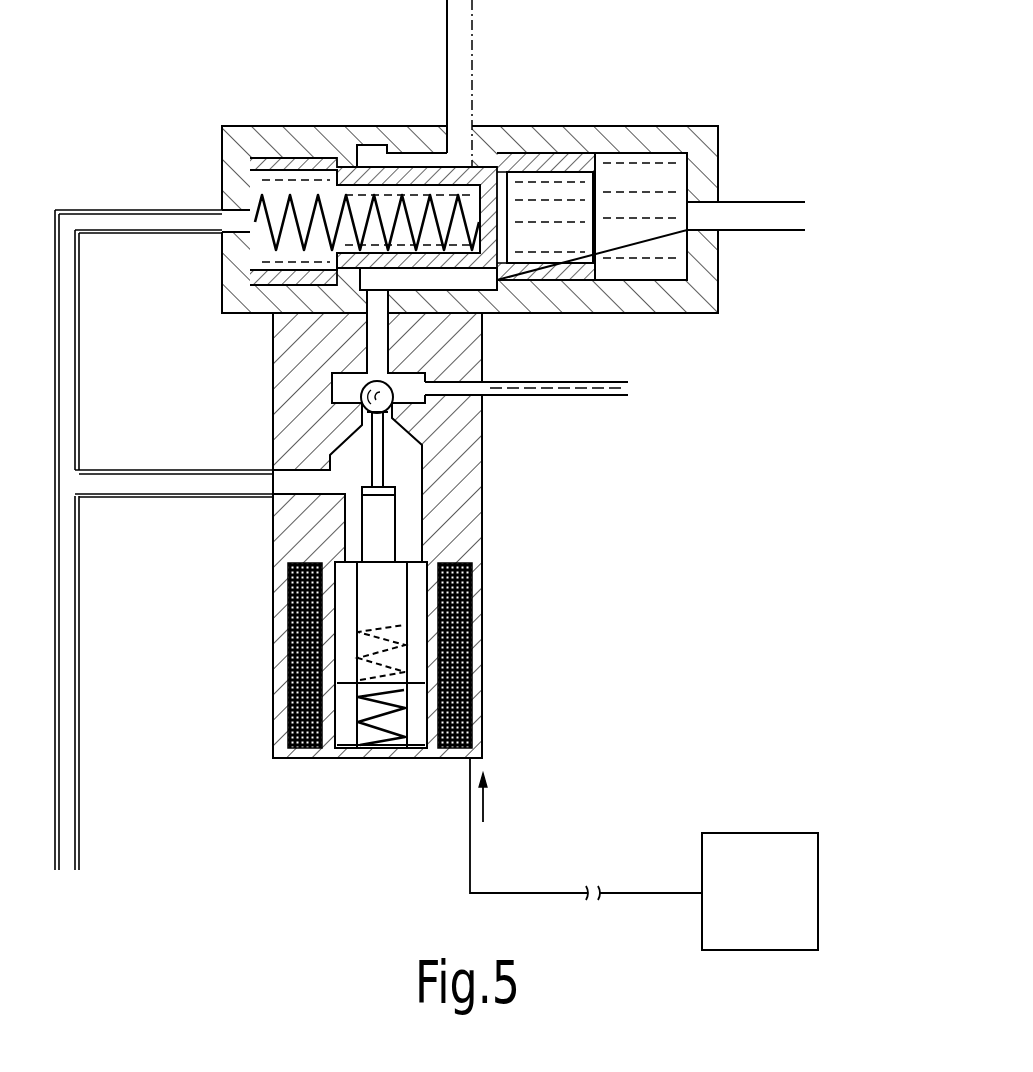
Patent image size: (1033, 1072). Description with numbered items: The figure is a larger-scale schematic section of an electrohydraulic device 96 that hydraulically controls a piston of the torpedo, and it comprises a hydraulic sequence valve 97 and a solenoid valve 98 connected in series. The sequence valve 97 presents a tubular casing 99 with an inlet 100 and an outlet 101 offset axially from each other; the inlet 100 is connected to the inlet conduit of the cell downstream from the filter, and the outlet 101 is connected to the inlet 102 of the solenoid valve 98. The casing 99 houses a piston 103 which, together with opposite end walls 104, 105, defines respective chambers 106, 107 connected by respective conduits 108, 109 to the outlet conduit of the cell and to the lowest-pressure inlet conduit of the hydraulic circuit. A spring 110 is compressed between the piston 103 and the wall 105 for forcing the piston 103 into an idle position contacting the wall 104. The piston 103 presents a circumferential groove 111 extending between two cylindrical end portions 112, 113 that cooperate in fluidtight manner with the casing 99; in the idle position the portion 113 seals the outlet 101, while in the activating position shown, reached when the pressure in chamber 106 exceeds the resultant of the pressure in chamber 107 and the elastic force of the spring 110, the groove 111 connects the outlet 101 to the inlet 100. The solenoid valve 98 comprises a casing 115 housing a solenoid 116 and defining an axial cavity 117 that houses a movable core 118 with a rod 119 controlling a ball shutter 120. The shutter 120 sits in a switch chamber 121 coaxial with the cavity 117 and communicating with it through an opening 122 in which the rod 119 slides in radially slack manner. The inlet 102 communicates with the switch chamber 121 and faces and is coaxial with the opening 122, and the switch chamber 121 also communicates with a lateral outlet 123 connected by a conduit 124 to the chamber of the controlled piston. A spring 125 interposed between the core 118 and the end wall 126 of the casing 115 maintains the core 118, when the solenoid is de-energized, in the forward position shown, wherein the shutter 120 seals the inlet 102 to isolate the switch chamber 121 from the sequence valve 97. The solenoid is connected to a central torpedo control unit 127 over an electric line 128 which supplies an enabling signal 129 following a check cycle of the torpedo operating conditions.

The electrohydraulic device 96 is at (622, 455).
The hydraulic sequence valve 97 is at (604, 112).
The solenoid valve 98 is at (398, 440).
The tubular casing 99 is at (652, 312).
The inlet 100 is at (460, 70).
The outlet 101 is at (387, 300).
The inlet 102 is at (358, 342).
The piston 103 is at (508, 210).
The end wall 104 is at (706, 165).
The end wall 105 is at (226, 178).
The chamber 106 is at (718, 298).
The chamber 107 is at (262, 272).
The conduit 108 is at (753, 214).
The conduit 109 is at (80, 220).
The spring 110 is at (250, 166).
The circumferential groove 111 is at (400, 158).
The cylindrical end portion 112 is at (556, 165).
The cylindrical end portion 113 is at (287, 158).
The casing 115 is at (455, 568).
The solenoid 116 is at (462, 712).
The axial cavity 117 is at (342, 540).
The movable core 118 is at (330, 668).
The rod 119 is at (400, 545).
The ball shutter 120 is at (394, 402).
The switch chamber 121 is at (340, 426).
The opening 122 is at (392, 432).
The lateral outlet 123 is at (486, 376).
The conduit 124 is at (588, 391).
The spring 125 is at (345, 752).
The end wall 126 is at (352, 760).
The central torpedo control unit 127 is at (807, 930).
The electric line 128 is at (567, 893).
The enabling signal 129 is at (483, 803).